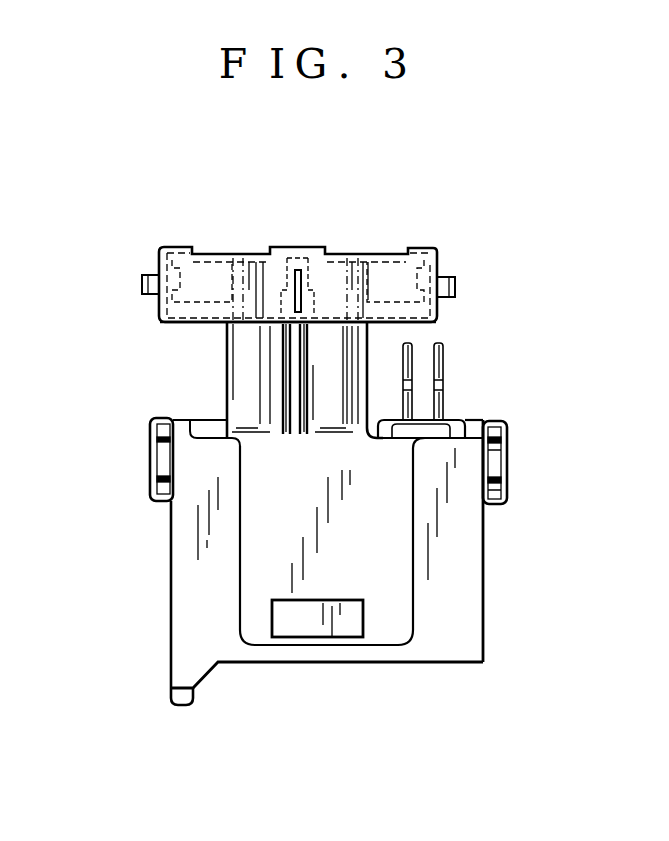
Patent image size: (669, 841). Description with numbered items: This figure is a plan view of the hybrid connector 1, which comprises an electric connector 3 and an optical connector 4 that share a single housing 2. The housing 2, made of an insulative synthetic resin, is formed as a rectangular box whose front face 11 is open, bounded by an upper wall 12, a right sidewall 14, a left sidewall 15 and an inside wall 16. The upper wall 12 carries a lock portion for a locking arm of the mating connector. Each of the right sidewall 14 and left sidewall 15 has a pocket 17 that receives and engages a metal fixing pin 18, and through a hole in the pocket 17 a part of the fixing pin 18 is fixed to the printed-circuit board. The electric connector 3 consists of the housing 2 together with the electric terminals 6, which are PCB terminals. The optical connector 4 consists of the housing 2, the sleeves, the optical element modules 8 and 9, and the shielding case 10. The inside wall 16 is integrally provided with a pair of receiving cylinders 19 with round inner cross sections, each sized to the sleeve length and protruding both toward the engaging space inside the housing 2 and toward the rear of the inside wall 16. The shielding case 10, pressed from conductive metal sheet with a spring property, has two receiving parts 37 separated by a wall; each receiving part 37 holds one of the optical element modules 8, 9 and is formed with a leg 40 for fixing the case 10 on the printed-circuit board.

The hybrid connector 1 is at (415, 195).
The housing 2 is at (170, 662).
The electric connector 3 is at (480, 400).
The optical connector 4 is at (126, 279).
The electric terminals 6 is at (413, 363).
The optical element module 8 is at (378, 277).
The optical element module 9 is at (233, 268).
The shielding case 10 is at (170, 323).
The front face 11 is at (452, 665).
The upper wall 12 is at (193, 576).
The right sidewall 14 is at (485, 583).
The left sidewall 15 is at (170, 525).
The inside wall 16 is at (267, 437).
The pocket 17 is at (150, 437).
The fixing pin 18 is at (163, 467).
The receiving cylinder 19 is at (237, 351).
The receiving part 37 is at (256, 268).
The leg 40 is at (142, 287).